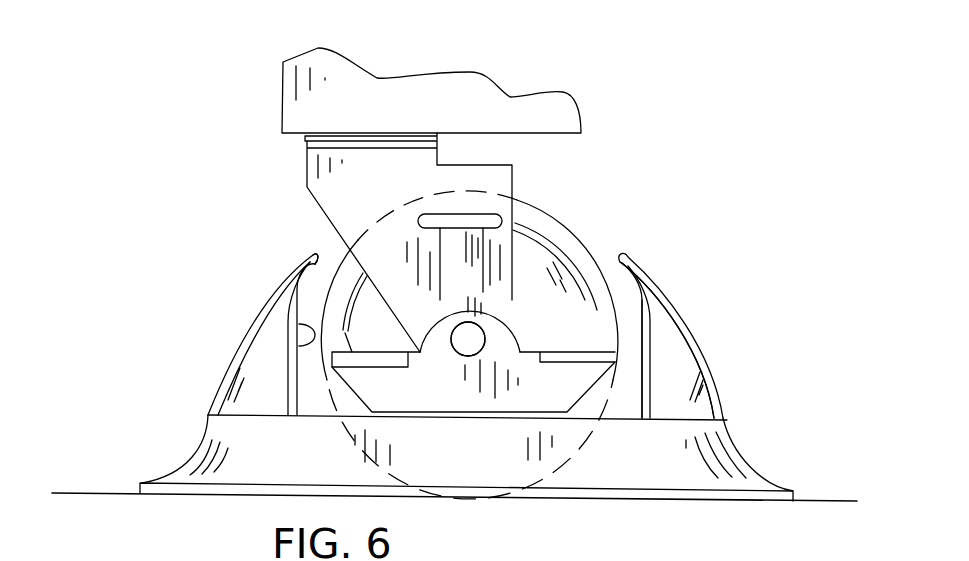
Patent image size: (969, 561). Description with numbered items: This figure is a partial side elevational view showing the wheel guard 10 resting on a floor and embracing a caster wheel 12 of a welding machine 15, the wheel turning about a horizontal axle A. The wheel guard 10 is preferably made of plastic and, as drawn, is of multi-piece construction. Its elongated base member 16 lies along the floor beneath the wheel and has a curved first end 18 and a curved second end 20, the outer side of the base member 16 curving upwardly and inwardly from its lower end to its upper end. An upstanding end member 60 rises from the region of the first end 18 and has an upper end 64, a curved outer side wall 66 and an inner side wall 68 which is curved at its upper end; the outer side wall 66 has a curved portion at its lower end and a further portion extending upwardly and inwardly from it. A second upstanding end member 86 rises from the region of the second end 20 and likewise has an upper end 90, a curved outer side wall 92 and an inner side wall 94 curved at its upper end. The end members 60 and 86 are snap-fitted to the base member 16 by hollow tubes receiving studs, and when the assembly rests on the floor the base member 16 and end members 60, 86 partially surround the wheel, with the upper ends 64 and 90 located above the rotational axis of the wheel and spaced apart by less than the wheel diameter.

The wheel guard 10 is at (712, 310).
The caster wheel 12 is at (573, 250).
The welding machine 15 is at (532, 82).
The elongated base member 16 is at (670, 455).
The curved first end 18 is at (190, 450).
The curved second end 20 is at (748, 462).
The upstanding end member 60 is at (262, 275).
The upper end 64 is at (312, 252).
The curved outer side wall 66 is at (248, 306).
The inner side wall 68 is at (315, 337).
The upstanding end member 86 is at (723, 353).
The upper end 90 is at (623, 255).
The curved outer side wall 92 is at (718, 385).
The inner side wall 94 is at (643, 388).
The horizontal axle A is at (471, 338).